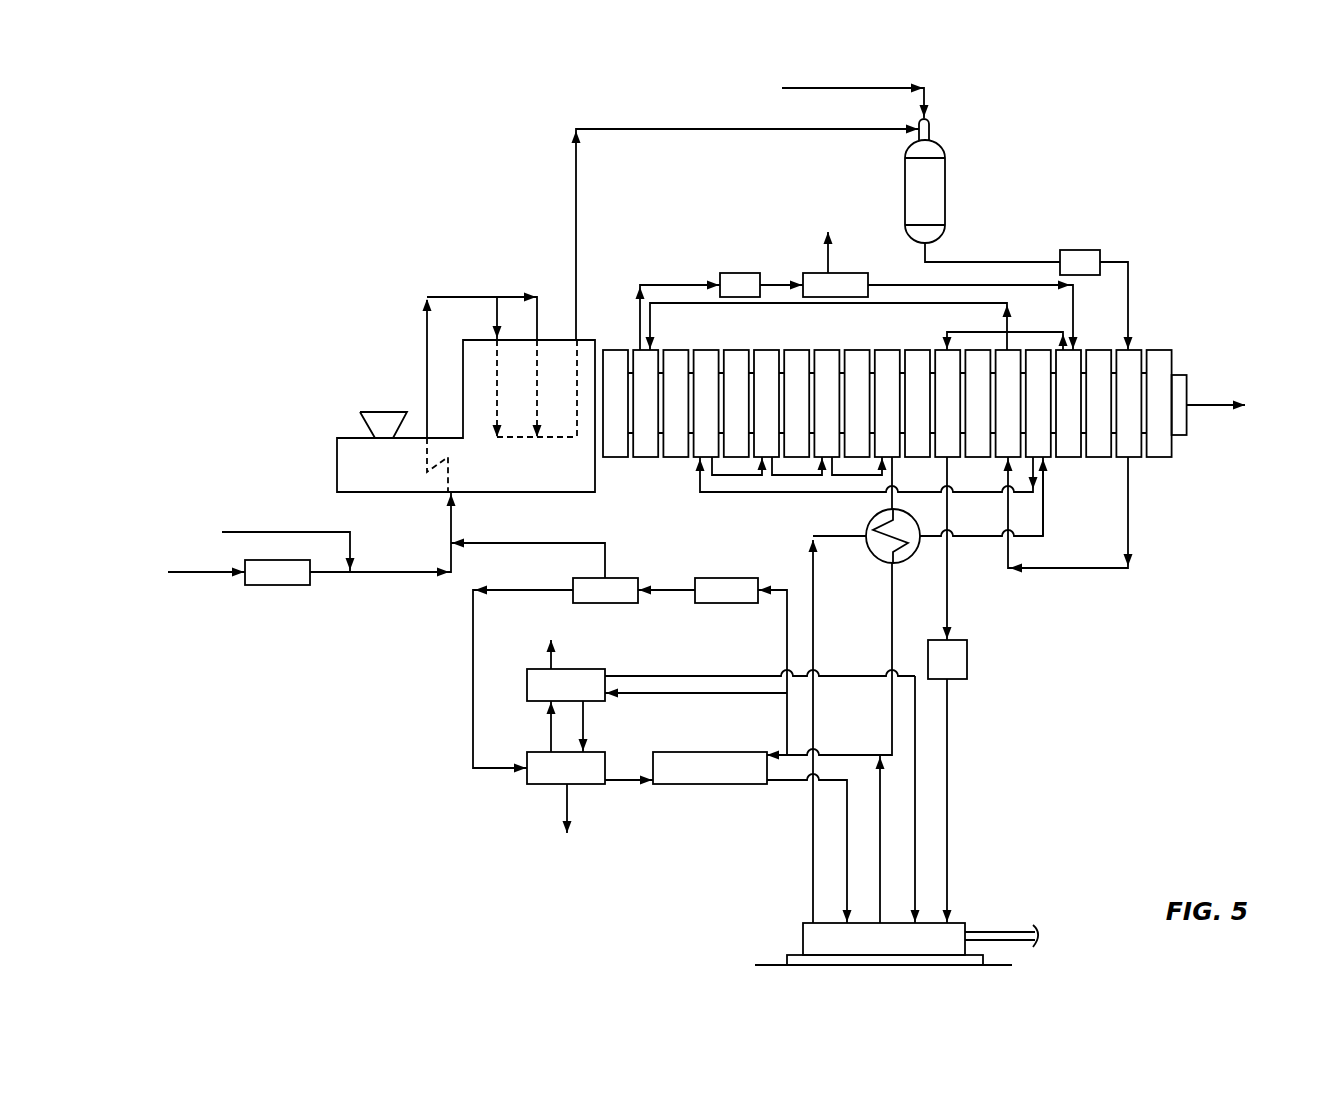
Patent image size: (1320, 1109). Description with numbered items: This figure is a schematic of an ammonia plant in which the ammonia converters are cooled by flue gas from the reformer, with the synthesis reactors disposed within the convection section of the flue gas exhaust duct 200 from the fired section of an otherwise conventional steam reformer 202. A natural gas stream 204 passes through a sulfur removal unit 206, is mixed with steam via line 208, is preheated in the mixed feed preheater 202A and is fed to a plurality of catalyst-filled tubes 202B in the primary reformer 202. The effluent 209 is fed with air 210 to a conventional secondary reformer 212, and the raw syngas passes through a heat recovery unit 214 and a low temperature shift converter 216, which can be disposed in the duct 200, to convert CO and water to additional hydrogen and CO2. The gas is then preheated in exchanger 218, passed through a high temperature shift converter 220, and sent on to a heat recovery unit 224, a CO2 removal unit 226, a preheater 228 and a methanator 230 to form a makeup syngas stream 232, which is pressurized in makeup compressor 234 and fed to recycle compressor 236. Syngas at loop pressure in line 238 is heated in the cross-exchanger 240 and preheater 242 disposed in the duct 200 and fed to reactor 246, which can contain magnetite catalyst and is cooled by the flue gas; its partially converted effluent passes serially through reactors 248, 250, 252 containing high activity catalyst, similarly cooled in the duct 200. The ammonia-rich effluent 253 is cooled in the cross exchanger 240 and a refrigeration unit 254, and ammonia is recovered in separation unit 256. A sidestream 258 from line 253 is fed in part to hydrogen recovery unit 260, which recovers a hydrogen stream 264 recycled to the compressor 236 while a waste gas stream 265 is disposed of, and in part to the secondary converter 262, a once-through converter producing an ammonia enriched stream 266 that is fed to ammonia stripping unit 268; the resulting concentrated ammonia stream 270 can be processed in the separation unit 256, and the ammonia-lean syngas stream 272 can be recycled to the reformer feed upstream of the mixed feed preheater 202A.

The flue gas exhaust duct 200 is at (666, 498).
The steam reformer 202 is at (523, 492).
The mixed feed preheater 202A is at (425, 450).
The catalyst-filled tubes 202B is at (497, 378).
The natural gas stream 204 is at (209, 577).
The sulfur removal unit 206 is at (276, 587).
The steam line 208 is at (293, 530).
The reformer effluent 209 is at (576, 207).
The air 210 is at (862, 92).
The secondary reformer 212 is at (905, 187).
The heat recovery unit 214 is at (1085, 250).
The low temperature shift converter 216 is at (1133, 347).
The exchanger 218 is at (1010, 342).
The high temperature shift converter 220 is at (638, 347).
The heat recovery unit 224 is at (735, 270).
The CO2 removal unit 226 is at (818, 270).
The preheater 228 is at (1065, 460).
The methanator 230 is at (941, 348).
The makeup syngas stream 232 is at (948, 615).
The makeup compressor 234 is at (969, 658).
The recycle compressor 236 is at (960, 922).
The loop pressure syngas line 238 is at (812, 838).
The cross-exchanger 240 is at (870, 525).
The preheater 242 is at (1047, 470).
The reactor 246 is at (707, 348).
The reactor 248 is at (764, 348).
The reactor 250 is at (824, 348).
The reactor 252 is at (884, 348).
The ammonia-rich effluent 253 is at (892, 613).
The refrigeration unit 254 is at (712, 752).
The separation unit 256 is at (588, 787).
The sidestream 258 is at (787, 725).
The hydrogen recovery unit 260 is at (583, 668).
The secondary converter 262 is at (693, 583).
The hydrogen stream 264 is at (915, 807).
The waste gas stream 265 is at (548, 660).
The ammonia enriched stream 266 is at (665, 595).
The ammonia stripping unit 268 is at (602, 578).
The concentrated ammonia stream 270 is at (472, 675).
The ammonia-lean syngas stream 272 is at (528, 548).